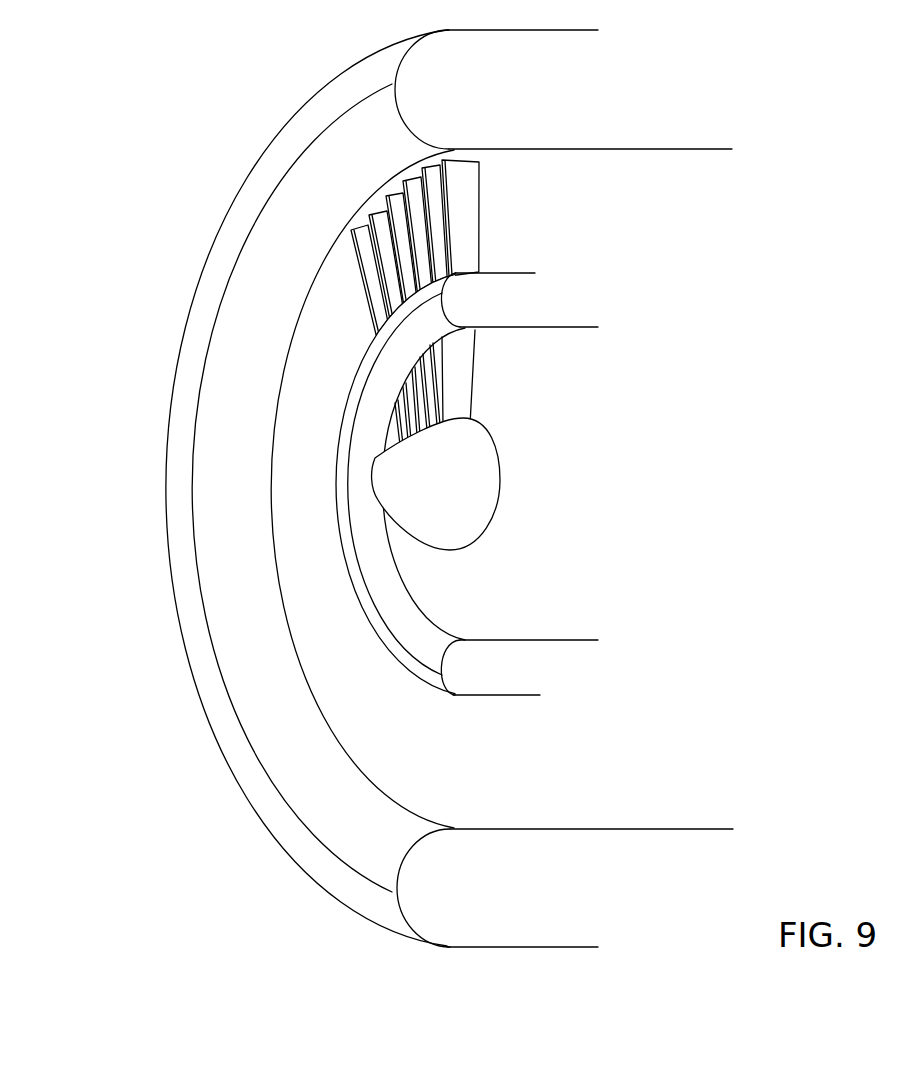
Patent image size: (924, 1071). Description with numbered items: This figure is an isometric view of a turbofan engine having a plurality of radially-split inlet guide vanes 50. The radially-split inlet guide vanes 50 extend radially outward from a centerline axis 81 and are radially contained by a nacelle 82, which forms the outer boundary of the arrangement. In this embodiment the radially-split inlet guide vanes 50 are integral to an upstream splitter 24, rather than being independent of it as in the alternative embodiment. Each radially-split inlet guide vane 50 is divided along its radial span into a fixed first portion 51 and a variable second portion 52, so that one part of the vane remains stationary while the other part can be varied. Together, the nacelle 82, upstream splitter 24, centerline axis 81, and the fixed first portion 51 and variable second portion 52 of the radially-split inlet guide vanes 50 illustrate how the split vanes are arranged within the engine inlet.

The nacelle 82 is at (222, 119).
The upstream splitter 24 is at (357, 325).
The variable second portion 52 is at (575, 216).
The radially-split inlet guide vanes 50 is at (720, 255).
The fixed first portion 51 is at (540, 371).
The centerline axis 81 is at (535, 458).